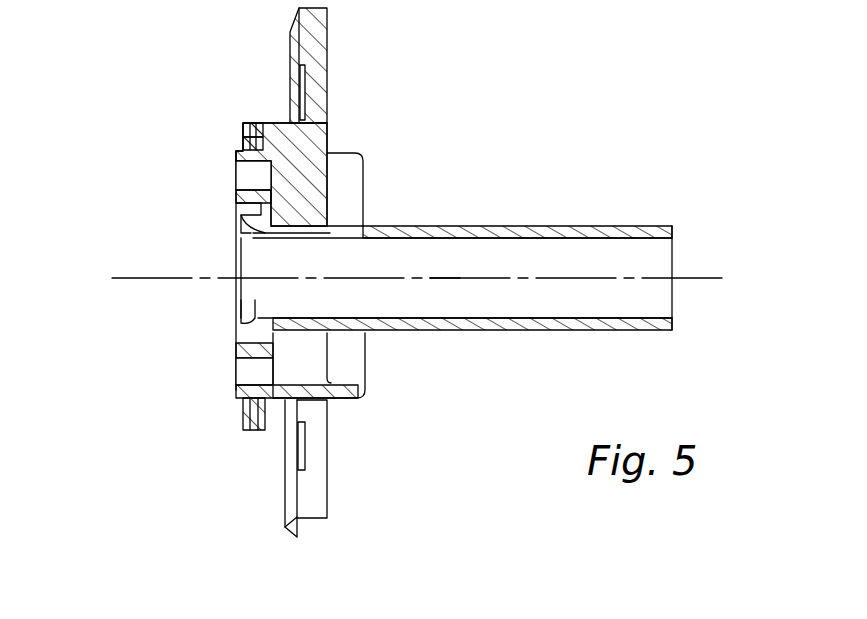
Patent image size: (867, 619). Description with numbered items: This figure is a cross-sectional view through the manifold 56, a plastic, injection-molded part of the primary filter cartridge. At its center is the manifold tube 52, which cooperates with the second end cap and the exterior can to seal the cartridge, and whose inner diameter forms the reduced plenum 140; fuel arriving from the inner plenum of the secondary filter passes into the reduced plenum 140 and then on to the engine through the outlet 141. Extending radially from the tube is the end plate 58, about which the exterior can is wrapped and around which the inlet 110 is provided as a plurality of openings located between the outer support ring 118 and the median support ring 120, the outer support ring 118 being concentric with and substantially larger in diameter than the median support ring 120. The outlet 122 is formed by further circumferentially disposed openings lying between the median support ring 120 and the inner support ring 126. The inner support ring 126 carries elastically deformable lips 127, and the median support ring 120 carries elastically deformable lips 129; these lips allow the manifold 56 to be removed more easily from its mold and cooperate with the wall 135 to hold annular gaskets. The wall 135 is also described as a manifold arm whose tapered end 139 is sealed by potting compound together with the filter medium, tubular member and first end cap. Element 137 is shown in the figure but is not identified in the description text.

The manifold tube 52 is at (508, 226).
The manifold 56 is at (492, 153).
The end plate 58 is at (300, 157).
The inlet 110 is at (281, 481).
The outer support ring 118 is at (297, 22).
The median support ring 120 is at (240, 143).
The outlet 122 is at (236, 373).
The inner support ring 126 is at (238, 228).
The elastically deformable lips 127 is at (253, 237).
The elastically deformable lips 129 is at (243, 123).
The wall 135 is at (236, 158).
The bearing 137 is at (236, 199).
The tapered end 139 is at (358, 400).
The reduced plenum 140 is at (620, 273).
The outlet 141 is at (236, 292).